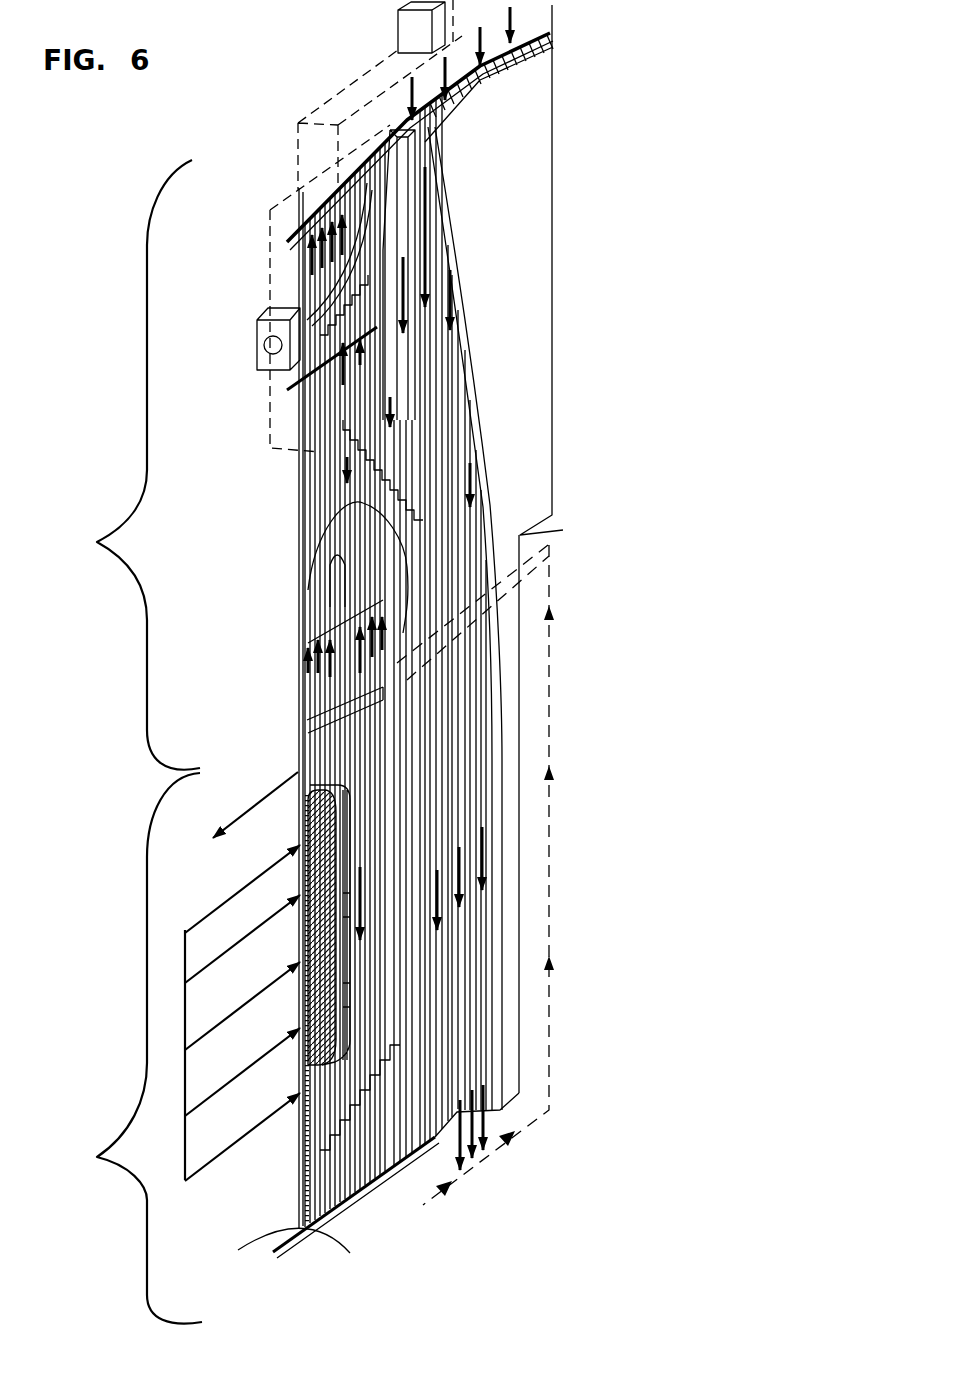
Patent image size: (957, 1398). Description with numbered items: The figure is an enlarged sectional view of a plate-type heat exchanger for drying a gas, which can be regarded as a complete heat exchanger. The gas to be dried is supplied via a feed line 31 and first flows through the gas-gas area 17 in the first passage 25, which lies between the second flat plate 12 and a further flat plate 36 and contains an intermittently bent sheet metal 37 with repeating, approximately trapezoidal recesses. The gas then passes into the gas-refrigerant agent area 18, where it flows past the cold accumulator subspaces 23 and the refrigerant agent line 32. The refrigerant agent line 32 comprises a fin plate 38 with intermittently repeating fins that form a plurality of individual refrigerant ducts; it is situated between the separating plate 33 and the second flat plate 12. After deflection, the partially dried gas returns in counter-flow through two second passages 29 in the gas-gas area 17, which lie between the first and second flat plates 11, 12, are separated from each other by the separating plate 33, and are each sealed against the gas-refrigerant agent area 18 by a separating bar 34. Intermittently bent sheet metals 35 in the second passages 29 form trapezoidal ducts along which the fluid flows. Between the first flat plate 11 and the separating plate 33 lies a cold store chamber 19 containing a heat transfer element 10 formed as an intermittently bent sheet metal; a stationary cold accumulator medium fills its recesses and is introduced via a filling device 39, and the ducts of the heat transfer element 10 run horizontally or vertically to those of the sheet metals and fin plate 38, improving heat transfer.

The heat transfer element 10 is at (300, 840).
The first flat plate 11 is at (315, 632).
The second flat plate 12 is at (327, 547).
The gas-gas area 17 is at (103, 540).
The gas-refrigerant agent area 18 is at (100, 1153).
The cold store chamber 19 is at (300, 820).
The cold accumulator subspaces 23 is at (214, 849).
The first passage 25 is at (442, 397).
The second passages 29 is at (377, 660).
The feed line 31 is at (410, 27).
The refrigerant agent line 32 is at (247, 1150).
The separating plate 33 is at (305, 778).
The separating bar 34 is at (320, 740).
The intermittently bent sheet metals 35 is at (367, 572).
The flat plate 36 is at (528, 265).
The intermittently bent sheet metal 37 is at (447, 431).
The fin plate 38 is at (297, 1133).
The filling device 39 is at (183, 1080).